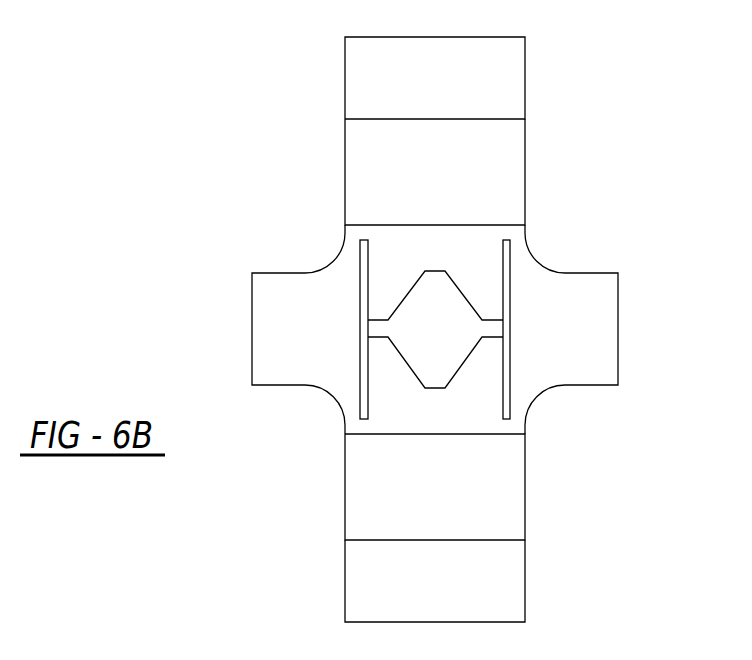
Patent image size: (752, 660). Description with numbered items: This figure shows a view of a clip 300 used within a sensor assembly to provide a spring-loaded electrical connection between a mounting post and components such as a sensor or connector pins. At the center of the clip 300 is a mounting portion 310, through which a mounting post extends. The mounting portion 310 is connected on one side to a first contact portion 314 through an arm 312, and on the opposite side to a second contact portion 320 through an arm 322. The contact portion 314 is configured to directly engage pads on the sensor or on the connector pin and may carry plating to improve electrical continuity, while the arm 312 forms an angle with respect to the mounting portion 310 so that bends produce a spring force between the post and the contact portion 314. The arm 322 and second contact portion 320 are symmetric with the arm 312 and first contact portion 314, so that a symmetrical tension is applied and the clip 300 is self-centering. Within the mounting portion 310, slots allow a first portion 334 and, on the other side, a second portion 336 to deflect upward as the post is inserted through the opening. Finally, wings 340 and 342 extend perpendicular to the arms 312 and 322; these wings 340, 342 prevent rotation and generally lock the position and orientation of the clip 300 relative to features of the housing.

The clip 300 is at (233, 148).
The mounting portion 310 is at (527, 309).
The arm 312 is at (482, 492).
The first contact portion 314 is at (493, 593).
The second contact portion 320 is at (503, 78).
The arm 322 is at (487, 170).
The first portion 334 is at (483, 270).
The second portion 336 is at (383, 363).
The wing 340 is at (277, 317).
The wing 342 is at (595, 360).